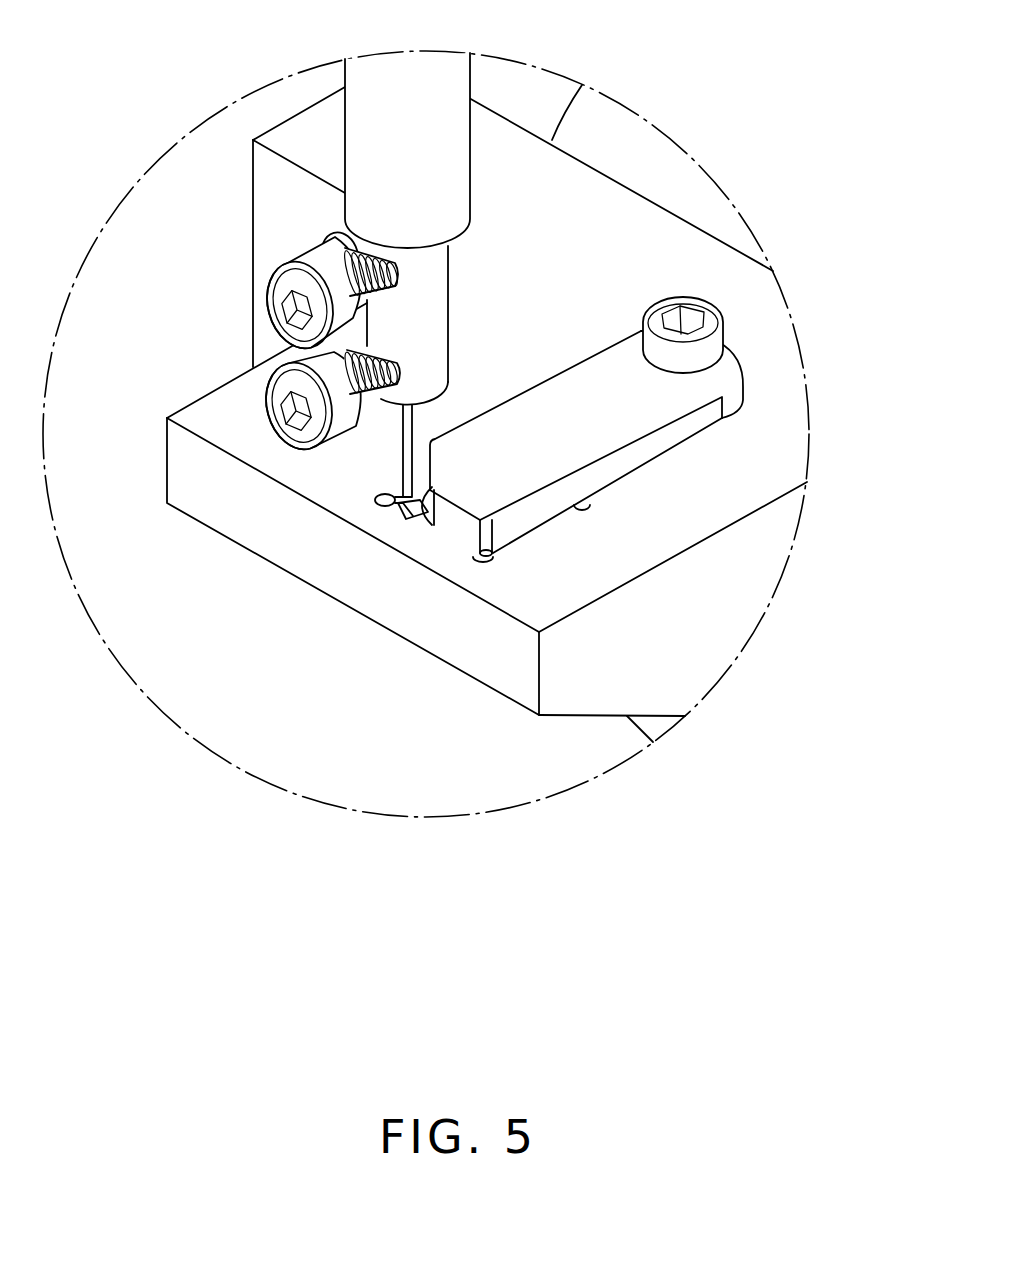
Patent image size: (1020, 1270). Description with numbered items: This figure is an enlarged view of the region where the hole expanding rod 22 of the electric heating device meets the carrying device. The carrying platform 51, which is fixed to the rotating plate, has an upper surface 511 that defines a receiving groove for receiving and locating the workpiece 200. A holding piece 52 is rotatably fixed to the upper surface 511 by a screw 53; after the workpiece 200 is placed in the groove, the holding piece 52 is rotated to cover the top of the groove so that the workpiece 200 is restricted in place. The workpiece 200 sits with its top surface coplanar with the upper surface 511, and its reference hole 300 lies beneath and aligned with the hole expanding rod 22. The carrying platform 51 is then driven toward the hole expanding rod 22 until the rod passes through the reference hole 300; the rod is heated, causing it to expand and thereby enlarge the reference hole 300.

The carrying platform 51 is at (613, 657).
The upper surface 511 is at (650, 520).
The holding piece 52 is at (632, 402).
The screw 53 is at (706, 315).
The hole expanding rod 22 is at (407, 443).
The reference hole 300 is at (400, 503).
The workpiece 200 is at (413, 510).